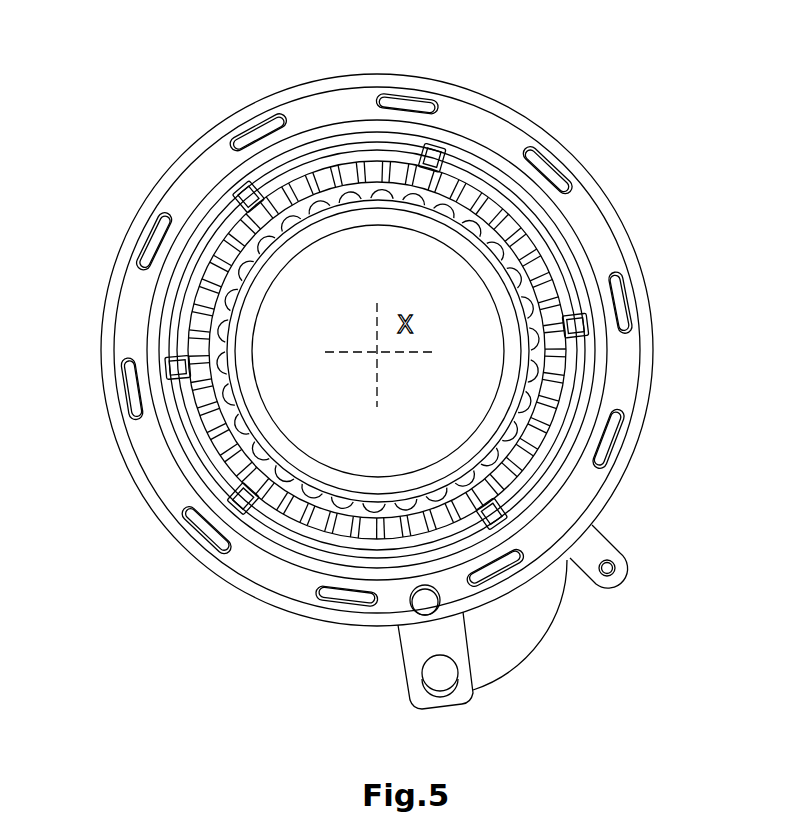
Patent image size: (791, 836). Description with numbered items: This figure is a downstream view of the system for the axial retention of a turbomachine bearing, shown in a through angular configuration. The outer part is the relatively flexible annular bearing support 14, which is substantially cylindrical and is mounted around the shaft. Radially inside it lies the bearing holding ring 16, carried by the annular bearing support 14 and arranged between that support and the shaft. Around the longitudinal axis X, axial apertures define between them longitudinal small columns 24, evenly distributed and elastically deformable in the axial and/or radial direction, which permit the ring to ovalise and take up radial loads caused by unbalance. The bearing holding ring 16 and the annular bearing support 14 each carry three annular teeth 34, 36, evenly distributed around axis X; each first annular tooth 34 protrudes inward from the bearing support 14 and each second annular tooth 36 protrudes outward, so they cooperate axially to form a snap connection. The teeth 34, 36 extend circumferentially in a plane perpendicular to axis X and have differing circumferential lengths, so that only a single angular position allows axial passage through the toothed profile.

The annular bearing support 14 is at (423, 83).
The bearing holding ring 16 is at (495, 400).
The small columns 24 is at (553, 347).
The first annular tooth 34 is at (482, 190).
The second annular tooth 36 is at (343, 157).